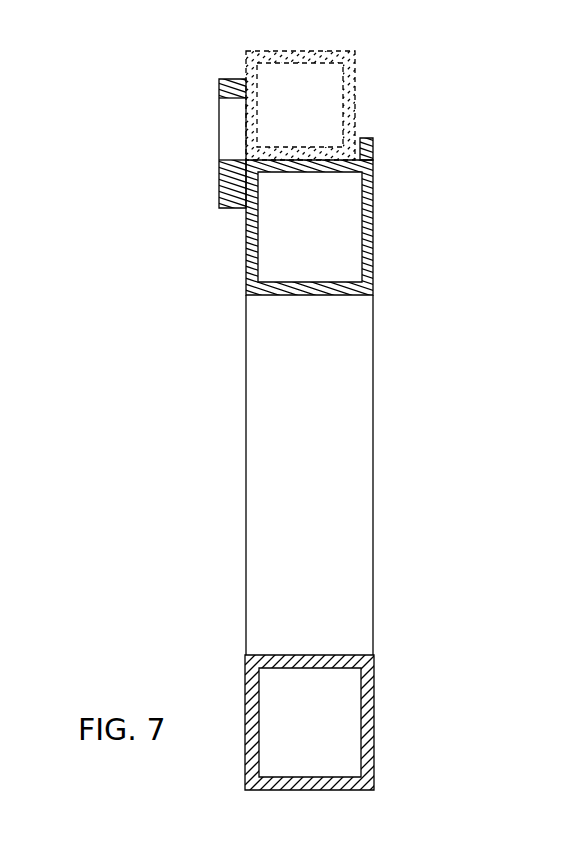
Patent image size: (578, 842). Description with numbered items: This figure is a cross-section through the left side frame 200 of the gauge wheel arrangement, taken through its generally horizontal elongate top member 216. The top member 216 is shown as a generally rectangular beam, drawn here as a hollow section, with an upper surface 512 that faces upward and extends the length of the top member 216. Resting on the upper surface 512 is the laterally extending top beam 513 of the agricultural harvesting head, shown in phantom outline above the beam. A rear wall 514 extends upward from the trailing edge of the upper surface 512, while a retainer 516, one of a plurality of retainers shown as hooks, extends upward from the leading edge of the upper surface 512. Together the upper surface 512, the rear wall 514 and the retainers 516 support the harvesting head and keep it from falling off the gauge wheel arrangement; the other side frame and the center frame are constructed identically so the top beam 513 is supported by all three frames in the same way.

The left side frame 200 is at (447, 190).
The top member 216 is at (369, 170).
The upper surface 512 is at (307, 160).
The top beam 513 is at (320, 52).
The rear wall 514 is at (360, 138).
The retainers 516 is at (228, 88).